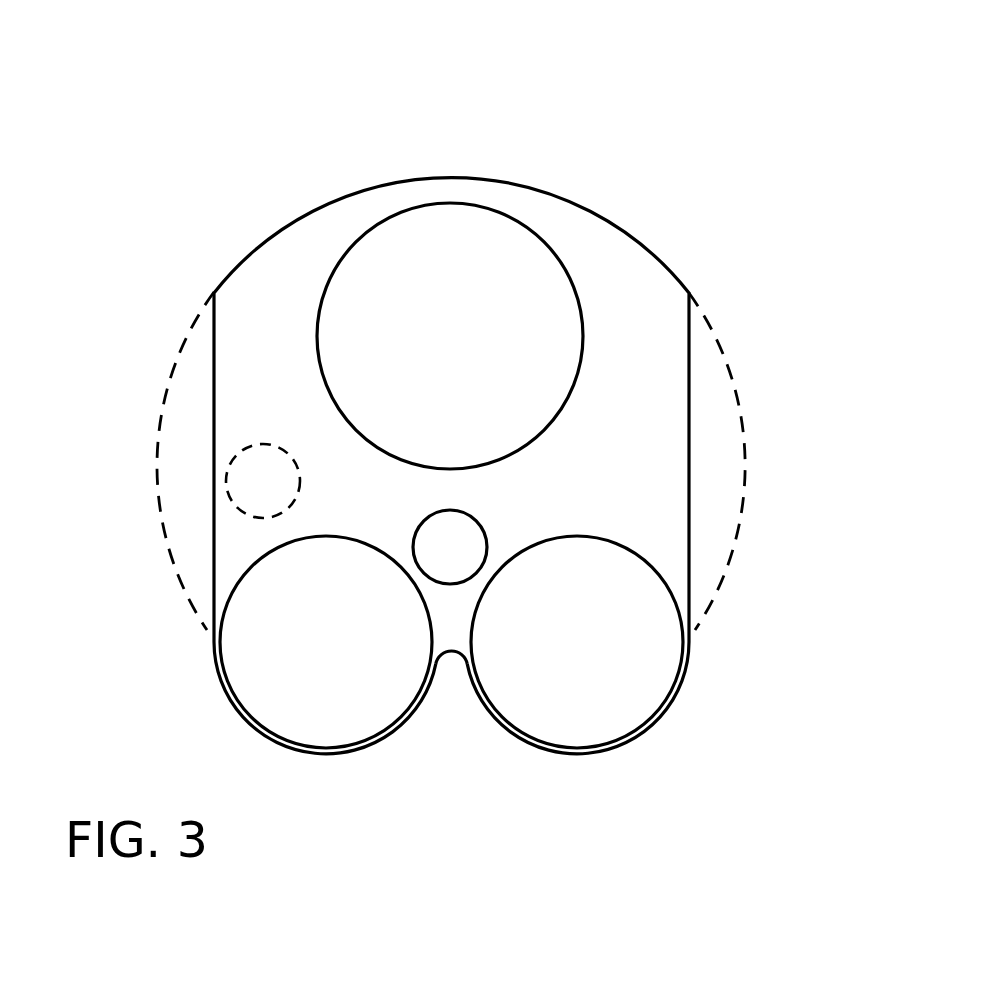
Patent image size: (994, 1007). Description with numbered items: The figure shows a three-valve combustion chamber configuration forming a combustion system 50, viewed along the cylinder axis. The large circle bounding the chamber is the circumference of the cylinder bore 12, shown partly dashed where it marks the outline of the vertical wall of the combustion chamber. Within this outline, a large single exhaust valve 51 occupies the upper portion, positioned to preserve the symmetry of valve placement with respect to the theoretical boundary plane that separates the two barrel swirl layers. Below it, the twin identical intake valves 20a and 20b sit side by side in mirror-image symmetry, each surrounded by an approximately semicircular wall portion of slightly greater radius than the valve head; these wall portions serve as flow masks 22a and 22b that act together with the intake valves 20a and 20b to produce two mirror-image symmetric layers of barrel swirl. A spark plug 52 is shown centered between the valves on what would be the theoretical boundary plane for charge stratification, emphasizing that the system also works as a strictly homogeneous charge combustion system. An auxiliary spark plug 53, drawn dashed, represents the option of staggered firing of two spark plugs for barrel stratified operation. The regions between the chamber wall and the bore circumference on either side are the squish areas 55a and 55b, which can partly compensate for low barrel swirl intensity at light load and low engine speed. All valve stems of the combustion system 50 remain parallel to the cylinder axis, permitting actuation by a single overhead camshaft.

The combustion system 50 is at (543, 102).
The cylinder bore 12 is at (300, 271).
The exhaust valve 51 is at (460, 313).
The spark plug 52 is at (484, 528).
The auxiliary spark plug 53 is at (280, 446).
The intake valve 20a is at (375, 663).
The intake valve 20b is at (620, 663).
The flow mask 22a is at (295, 751).
The flow mask 22b is at (562, 755).
The squish area 55a is at (187, 424).
The squish area 55b is at (722, 452).